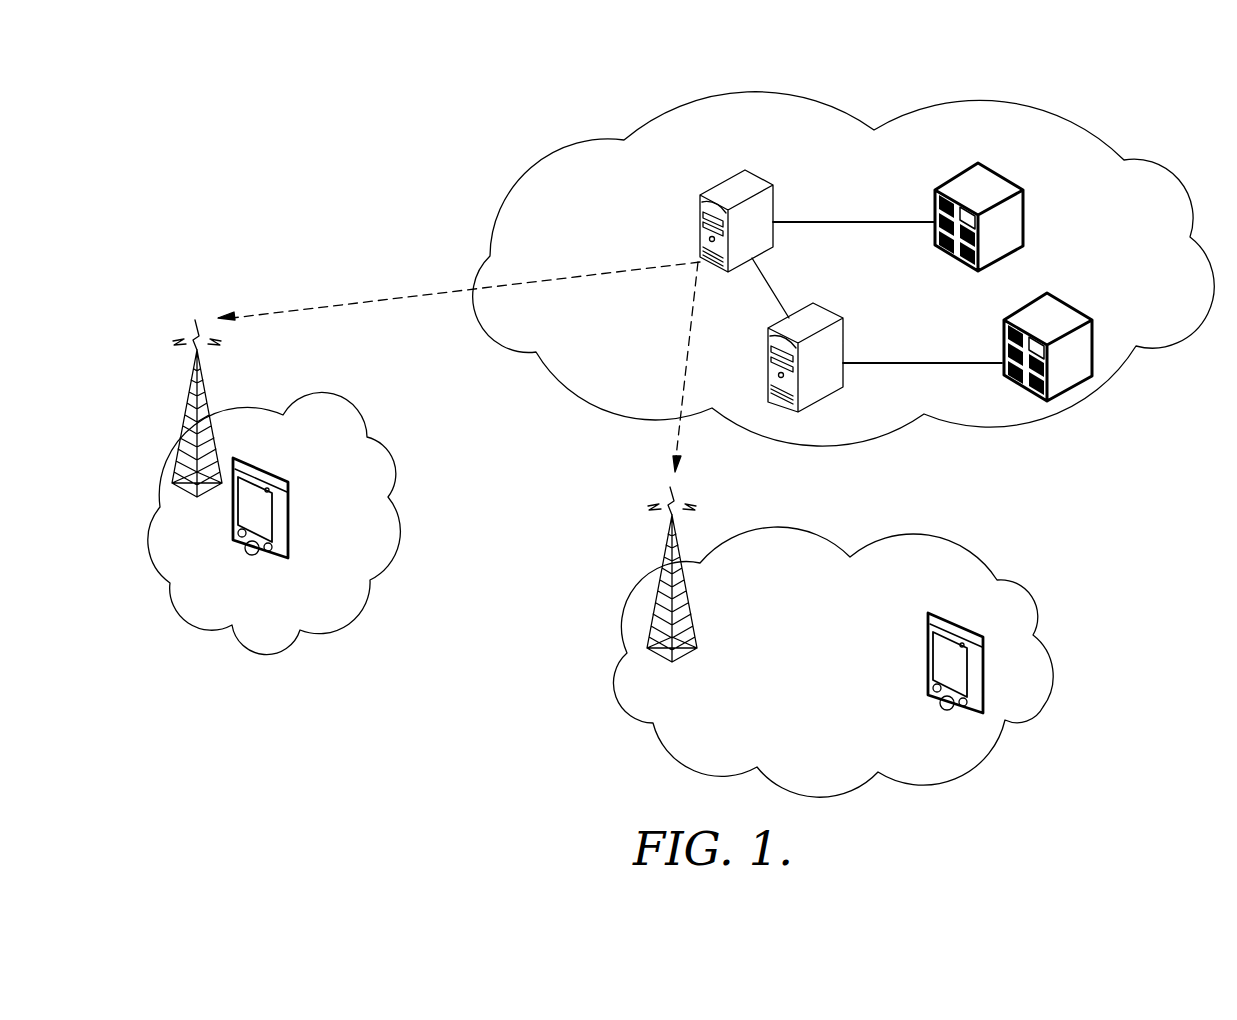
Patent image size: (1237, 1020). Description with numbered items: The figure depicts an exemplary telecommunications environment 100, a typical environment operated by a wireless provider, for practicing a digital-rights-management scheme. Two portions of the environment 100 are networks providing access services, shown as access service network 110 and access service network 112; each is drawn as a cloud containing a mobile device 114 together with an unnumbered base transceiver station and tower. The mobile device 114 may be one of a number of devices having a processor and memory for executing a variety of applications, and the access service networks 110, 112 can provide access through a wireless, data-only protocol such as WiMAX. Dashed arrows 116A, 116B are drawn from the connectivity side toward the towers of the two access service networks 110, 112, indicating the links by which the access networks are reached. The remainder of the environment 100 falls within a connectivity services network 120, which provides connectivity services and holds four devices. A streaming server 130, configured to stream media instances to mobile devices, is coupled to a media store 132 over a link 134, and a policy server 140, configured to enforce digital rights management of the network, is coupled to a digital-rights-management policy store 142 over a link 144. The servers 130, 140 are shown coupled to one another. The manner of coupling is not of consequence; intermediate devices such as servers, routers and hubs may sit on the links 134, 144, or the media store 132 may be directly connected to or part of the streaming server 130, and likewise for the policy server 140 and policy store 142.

The telecommunications environment 100 is at (308, 107).
The access service network 110 is at (267, 657).
The access service network 112 is at (1043, 707).
The mobile device 114 is at (268, 463).
The communication link to first network 116A is at (323, 304).
The communication link to second network 116B is at (680, 434).
The connectivity services network 120 is at (558, 145).
The streaming server 130 is at (713, 188).
The media store 132 is at (953, 181).
The connection between server and database 134 is at (808, 223).
The policy server 140 is at (778, 320).
The digital-rights-management policy store 142 is at (1030, 303).
The connection between second server and database 144 is at (937, 362).